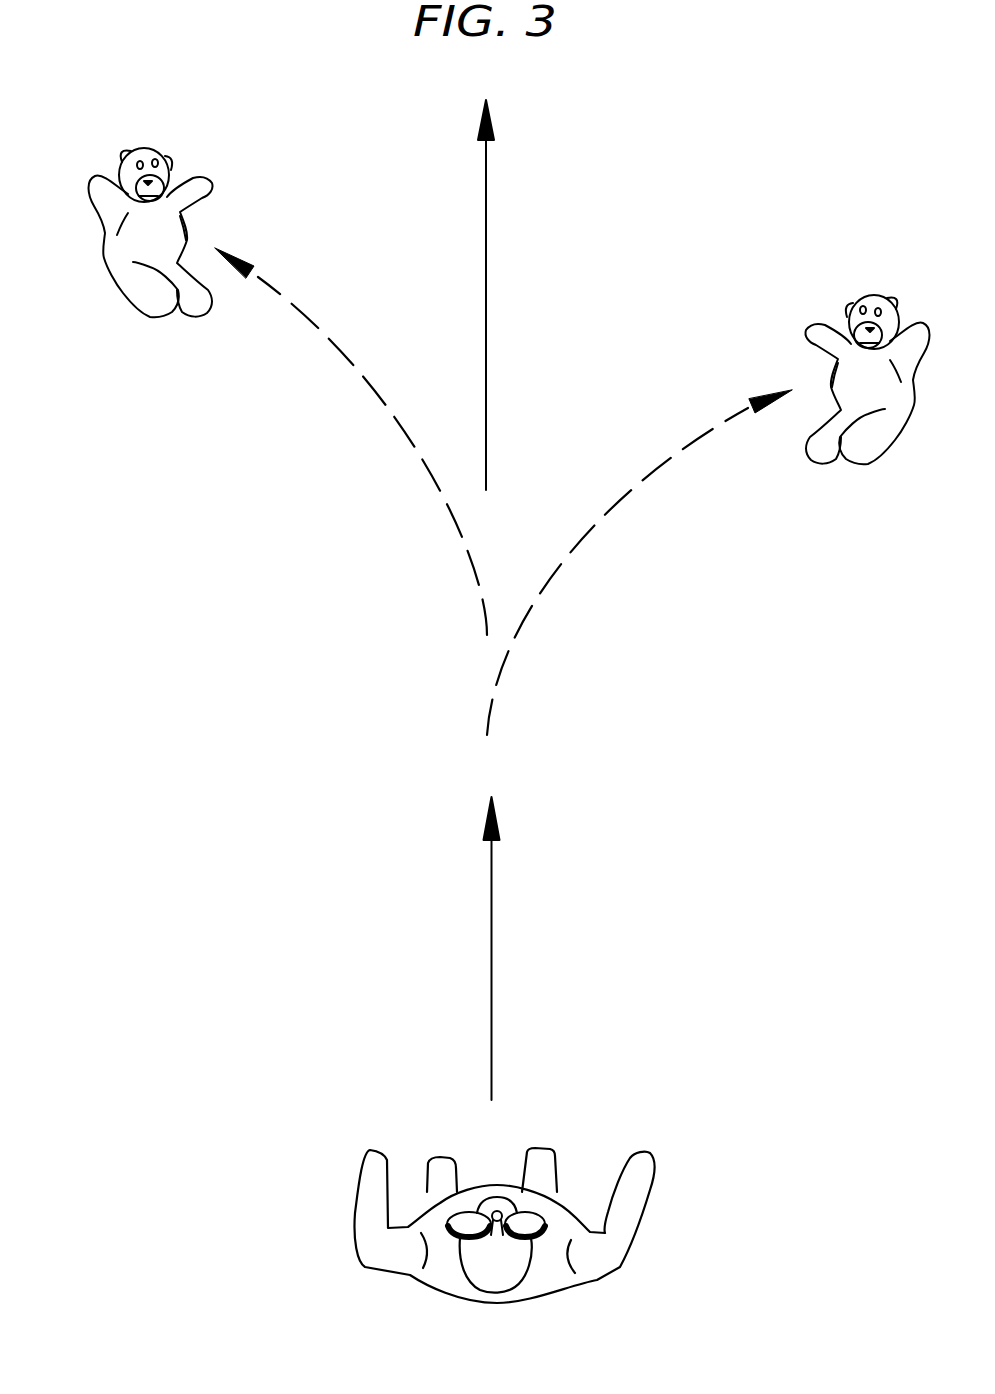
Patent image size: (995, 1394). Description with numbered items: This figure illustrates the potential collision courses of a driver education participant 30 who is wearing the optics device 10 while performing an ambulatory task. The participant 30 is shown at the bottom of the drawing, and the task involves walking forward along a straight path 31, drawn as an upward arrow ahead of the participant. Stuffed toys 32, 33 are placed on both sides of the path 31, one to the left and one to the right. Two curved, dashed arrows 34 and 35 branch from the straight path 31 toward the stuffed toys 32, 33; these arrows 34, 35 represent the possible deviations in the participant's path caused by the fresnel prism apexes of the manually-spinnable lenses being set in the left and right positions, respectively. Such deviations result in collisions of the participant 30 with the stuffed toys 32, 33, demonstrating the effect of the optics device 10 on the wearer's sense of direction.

The optics device 10 is at (448, 1226).
The driver education participant 30 is at (663, 1250).
The straight path 31 is at (492, 953).
The stuffed toy 32 is at (163, 318).
The stuffed toy 33 is at (813, 465).
The arrow 34 is at (397, 415).
The arrow 35 is at (595, 517).